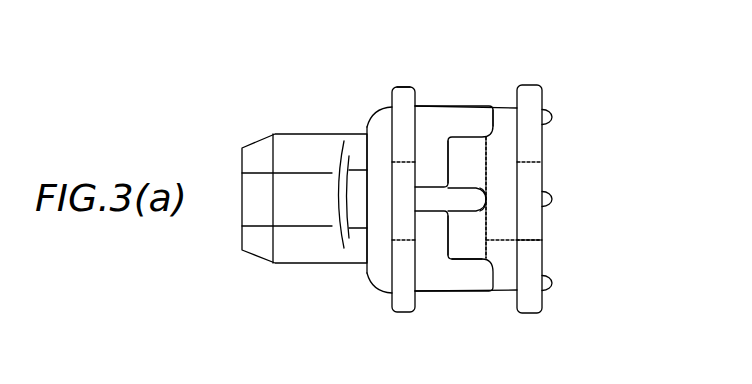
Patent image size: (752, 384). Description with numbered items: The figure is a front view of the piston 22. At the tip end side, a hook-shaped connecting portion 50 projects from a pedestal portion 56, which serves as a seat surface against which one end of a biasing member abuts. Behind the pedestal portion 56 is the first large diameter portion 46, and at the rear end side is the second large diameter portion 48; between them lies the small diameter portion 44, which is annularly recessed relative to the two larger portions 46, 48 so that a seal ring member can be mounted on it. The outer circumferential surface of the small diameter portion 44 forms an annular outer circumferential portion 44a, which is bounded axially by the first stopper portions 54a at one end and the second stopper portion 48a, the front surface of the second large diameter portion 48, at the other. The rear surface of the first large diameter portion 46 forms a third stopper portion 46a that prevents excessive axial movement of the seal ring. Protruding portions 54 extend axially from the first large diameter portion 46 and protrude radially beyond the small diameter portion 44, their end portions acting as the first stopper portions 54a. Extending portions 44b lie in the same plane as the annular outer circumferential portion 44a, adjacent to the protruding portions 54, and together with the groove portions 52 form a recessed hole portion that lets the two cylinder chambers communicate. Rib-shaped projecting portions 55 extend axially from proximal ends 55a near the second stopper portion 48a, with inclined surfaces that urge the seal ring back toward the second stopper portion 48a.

The piston 22 is at (470, 329).
The small diameter portion 44 is at (542, 240).
The annular outer circumferential portion 44a is at (503, 193).
The extending portions 44b is at (463, 250).
The first large diameter portion 46 is at (401, 98).
The third stopper portion 46a is at (421, 97).
The second large diameter portion 48 is at (541, 141).
The second stopper portion 48a is at (542, 95).
The connecting portion 50 is at (292, 150).
The groove portions 52 is at (428, 241).
The protruding portions 54 is at (438, 206).
The first stopper portions 54a is at (486, 199).
The projecting portions 55 is at (455, 104).
The proximal ends 55a is at (495, 107).
The pedestal portion 56 is at (373, 122).